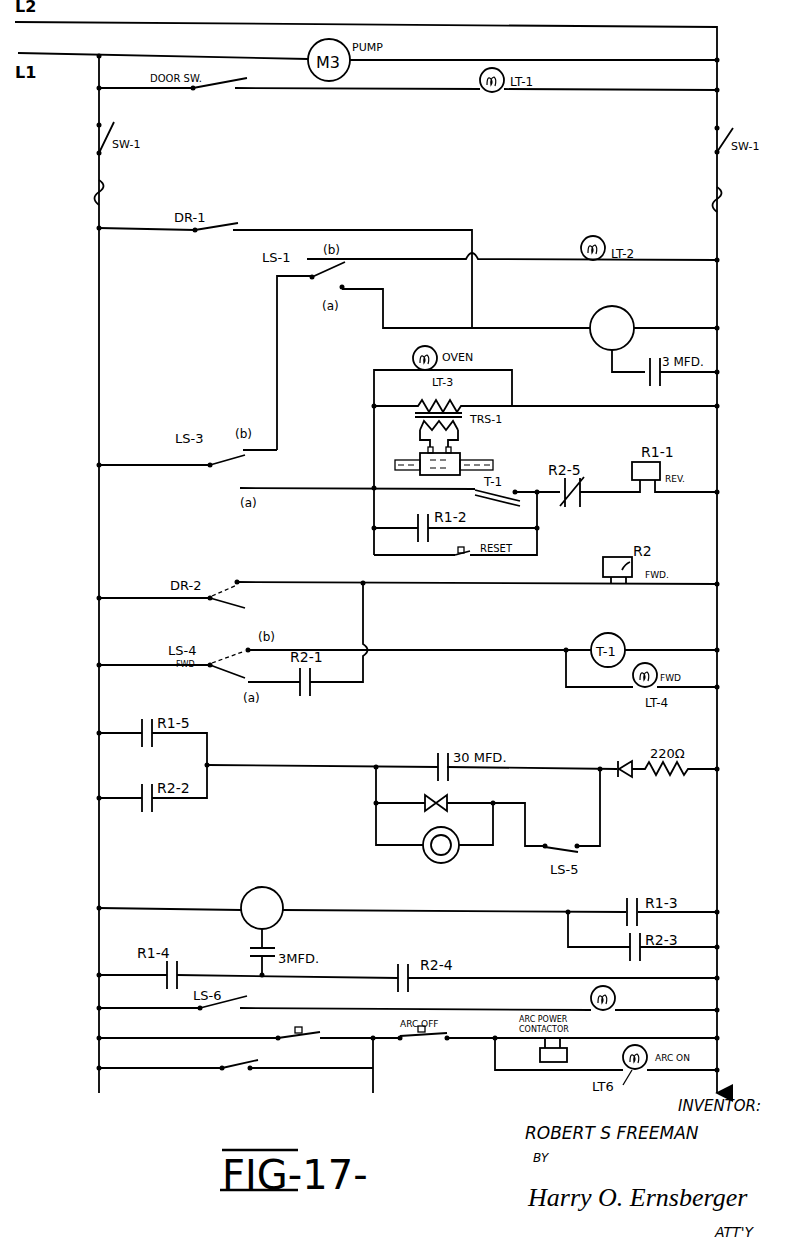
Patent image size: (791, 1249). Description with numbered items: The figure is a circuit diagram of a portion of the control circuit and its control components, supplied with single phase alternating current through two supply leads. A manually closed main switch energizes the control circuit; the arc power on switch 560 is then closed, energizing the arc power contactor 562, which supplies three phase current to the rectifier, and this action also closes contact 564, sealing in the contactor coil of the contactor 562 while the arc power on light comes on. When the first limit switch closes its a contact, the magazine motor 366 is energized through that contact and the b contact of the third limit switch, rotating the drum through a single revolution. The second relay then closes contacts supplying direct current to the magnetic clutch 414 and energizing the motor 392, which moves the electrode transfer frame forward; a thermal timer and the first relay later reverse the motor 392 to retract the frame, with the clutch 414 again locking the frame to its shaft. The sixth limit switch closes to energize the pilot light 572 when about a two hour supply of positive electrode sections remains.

The magazine motor 366 is at (622, 309).
The motor 392 is at (247, 890).
The electromagnetic clutch 414 is at (422, 853).
The arc power on switch 560 is at (289, 1040).
The arc power contactor 562 is at (540, 1057).
The contact 564 is at (236, 1070).
The pilot light 572 is at (590, 998).